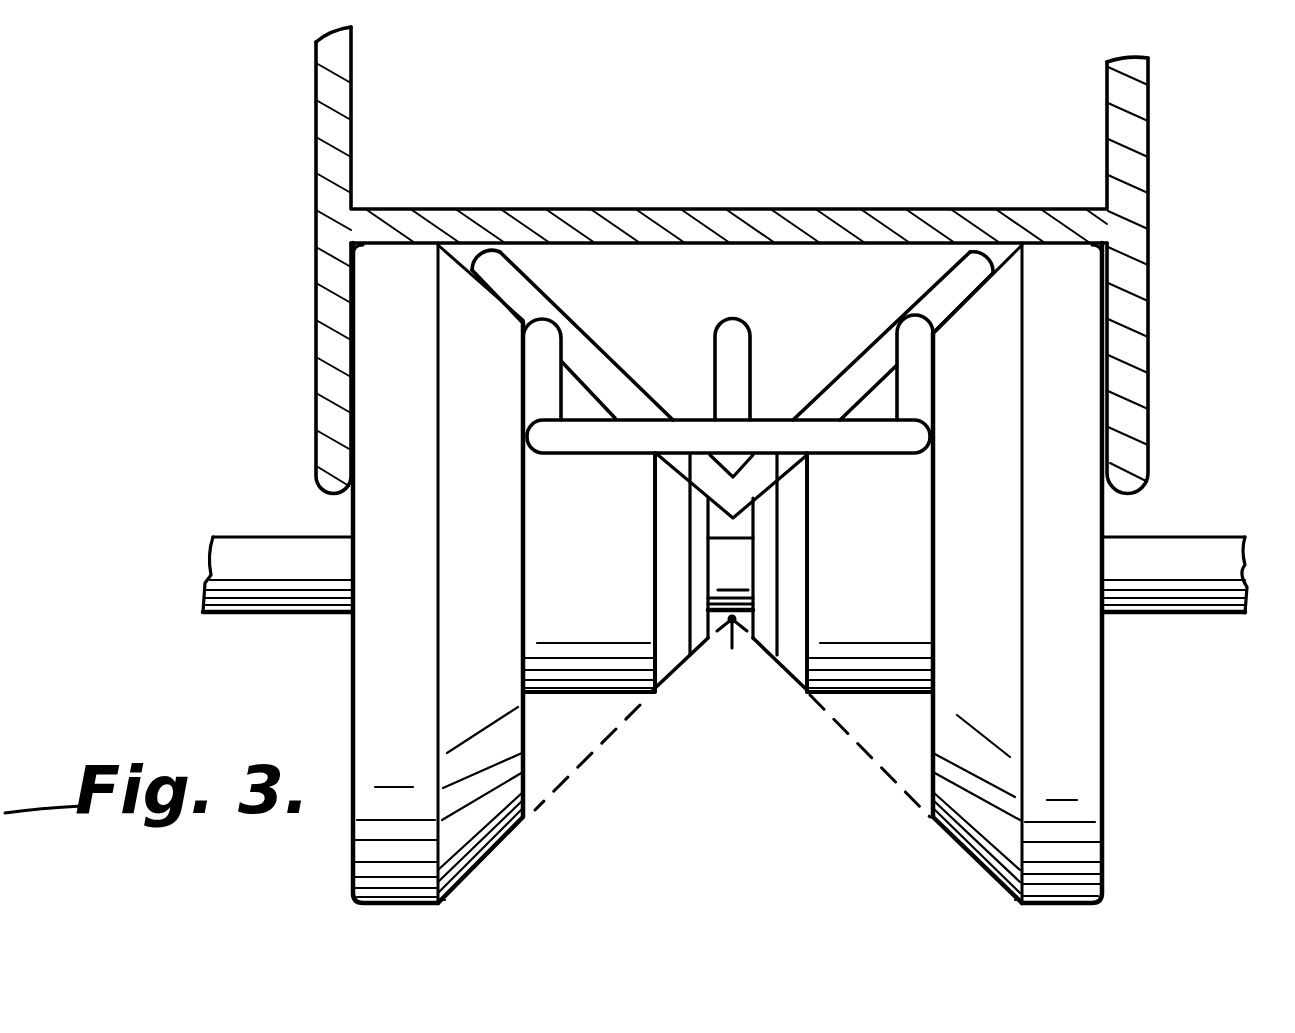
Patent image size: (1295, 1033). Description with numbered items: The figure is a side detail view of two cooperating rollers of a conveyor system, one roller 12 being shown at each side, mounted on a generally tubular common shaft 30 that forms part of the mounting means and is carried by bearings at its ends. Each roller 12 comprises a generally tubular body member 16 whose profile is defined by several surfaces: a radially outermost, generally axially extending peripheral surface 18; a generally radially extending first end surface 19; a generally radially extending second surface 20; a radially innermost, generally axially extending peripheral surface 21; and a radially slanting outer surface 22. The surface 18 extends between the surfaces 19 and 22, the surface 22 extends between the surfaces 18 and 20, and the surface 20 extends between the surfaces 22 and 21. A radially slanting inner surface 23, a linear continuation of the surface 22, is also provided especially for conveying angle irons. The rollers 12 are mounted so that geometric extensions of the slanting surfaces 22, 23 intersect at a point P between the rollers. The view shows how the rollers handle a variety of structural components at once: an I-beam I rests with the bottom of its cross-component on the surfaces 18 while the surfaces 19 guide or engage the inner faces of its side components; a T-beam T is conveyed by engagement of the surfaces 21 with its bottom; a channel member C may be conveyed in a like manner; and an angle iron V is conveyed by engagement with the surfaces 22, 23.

The I-beam I is at (1133, 153).
The first end surface 19 is at (353, 510).
The common shaft 30 is at (282, 600).
The channel member C is at (547, 340).
The angle iron V is at (872, 350).
The T-beam T is at (738, 340).
The body member 16 is at (503, 700).
The radially innermost peripheral surface 21 is at (600, 692).
The radially slanting inner surface 23 is at (785, 675).
The intersection point P is at (732, 654).
The second surface 20 is at (930, 767).
The radially slanting outer surface 22 is at (480, 845).
The roller 12 is at (462, 906).
The radially outermost peripheral surface 18 is at (388, 913).